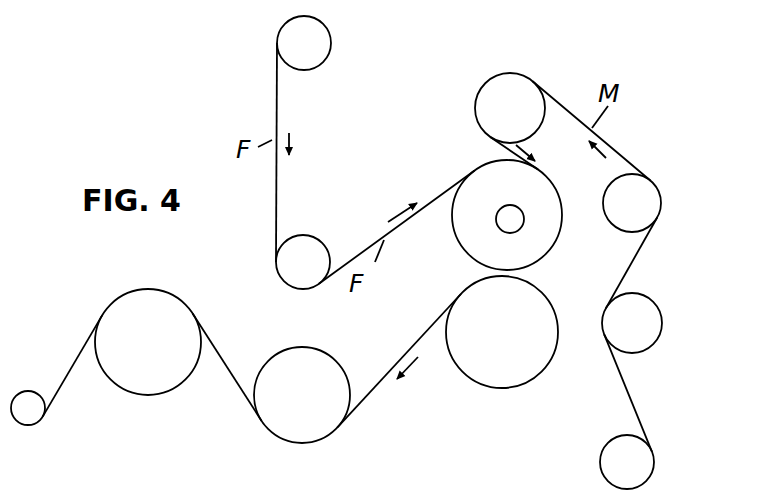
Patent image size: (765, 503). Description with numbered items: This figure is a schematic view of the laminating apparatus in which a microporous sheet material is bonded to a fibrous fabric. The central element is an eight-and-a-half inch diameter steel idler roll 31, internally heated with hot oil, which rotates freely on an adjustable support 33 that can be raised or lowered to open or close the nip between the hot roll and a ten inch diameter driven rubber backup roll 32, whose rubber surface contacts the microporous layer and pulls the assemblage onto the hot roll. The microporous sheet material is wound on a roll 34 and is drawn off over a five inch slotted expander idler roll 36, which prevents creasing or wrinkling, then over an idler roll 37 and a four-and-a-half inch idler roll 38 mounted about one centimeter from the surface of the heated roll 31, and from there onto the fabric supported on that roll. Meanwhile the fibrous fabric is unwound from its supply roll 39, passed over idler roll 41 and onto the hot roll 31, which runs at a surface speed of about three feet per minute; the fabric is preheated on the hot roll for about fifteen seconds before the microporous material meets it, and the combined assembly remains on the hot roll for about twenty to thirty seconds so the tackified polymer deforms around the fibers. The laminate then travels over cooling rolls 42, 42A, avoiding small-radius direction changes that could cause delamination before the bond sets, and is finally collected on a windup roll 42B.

The steel idler roll 31 is at (480, 233).
The driven rubber backup roll 32 is at (473, 357).
The adjustable support 33 is at (522, 230).
The roll 34 is at (612, 465).
The slotted expander idler roll 36 is at (652, 325).
The idler roll 37 is at (630, 220).
The idler roll 38 is at (495, 96).
The supply roll 39 is at (322, 50).
The idler roll 41 is at (315, 257).
The cooling roll 42 is at (317, 368).
The cooling roll 42A is at (162, 382).
The windup roll 42B is at (30, 420).